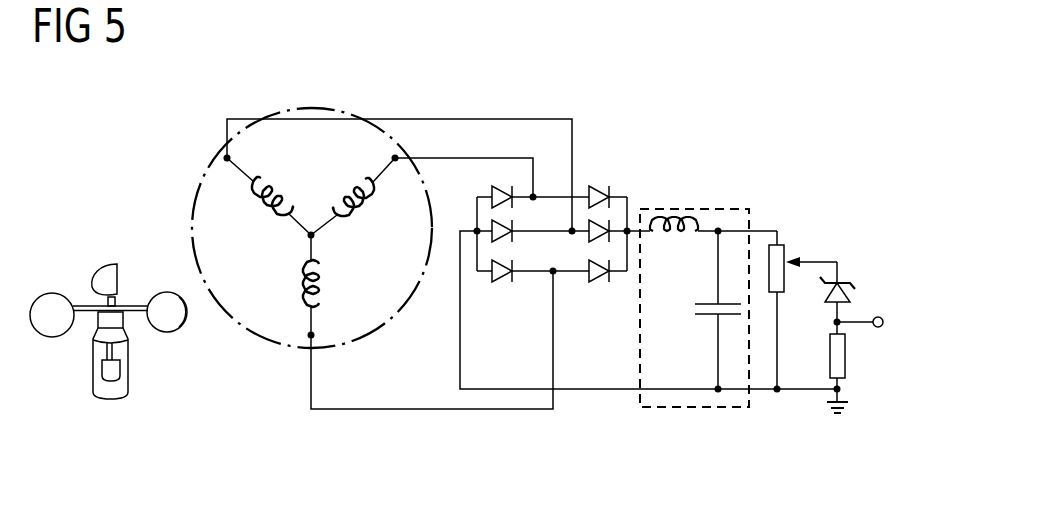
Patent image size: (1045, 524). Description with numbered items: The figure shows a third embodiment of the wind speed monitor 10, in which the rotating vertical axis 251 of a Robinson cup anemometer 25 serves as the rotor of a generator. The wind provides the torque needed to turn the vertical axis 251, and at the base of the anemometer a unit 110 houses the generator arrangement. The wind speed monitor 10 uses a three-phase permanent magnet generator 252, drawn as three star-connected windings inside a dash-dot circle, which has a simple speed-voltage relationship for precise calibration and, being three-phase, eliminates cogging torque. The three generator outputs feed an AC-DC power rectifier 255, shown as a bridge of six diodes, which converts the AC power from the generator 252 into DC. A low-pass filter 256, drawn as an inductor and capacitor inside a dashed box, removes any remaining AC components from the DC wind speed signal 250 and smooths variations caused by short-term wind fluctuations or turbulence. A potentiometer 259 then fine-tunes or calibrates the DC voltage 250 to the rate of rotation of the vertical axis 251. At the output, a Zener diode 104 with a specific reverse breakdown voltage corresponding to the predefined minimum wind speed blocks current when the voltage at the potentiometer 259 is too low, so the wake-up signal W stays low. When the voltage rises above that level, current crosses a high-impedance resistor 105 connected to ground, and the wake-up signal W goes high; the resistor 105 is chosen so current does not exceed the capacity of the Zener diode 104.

The wind speed monitor 10 is at (810, 80).
The anemometer 25 is at (132, 307).
The vertical axis 251 is at (105, 353).
The sensor unit 110 is at (113, 373).
The three-phase permanent magnet generator 252 is at (308, 108).
The AC-DC power rectifier 255 is at (614, 160).
The low-pass filter 256 is at (688, 408).
The DC wind speed signal 250 is at (763, 231).
The potentiometer 259 is at (788, 256).
The Zener diode 104 is at (852, 292).
The wake-up signal W is at (884, 323).
The high-impedance resistor 105 is at (845, 355).